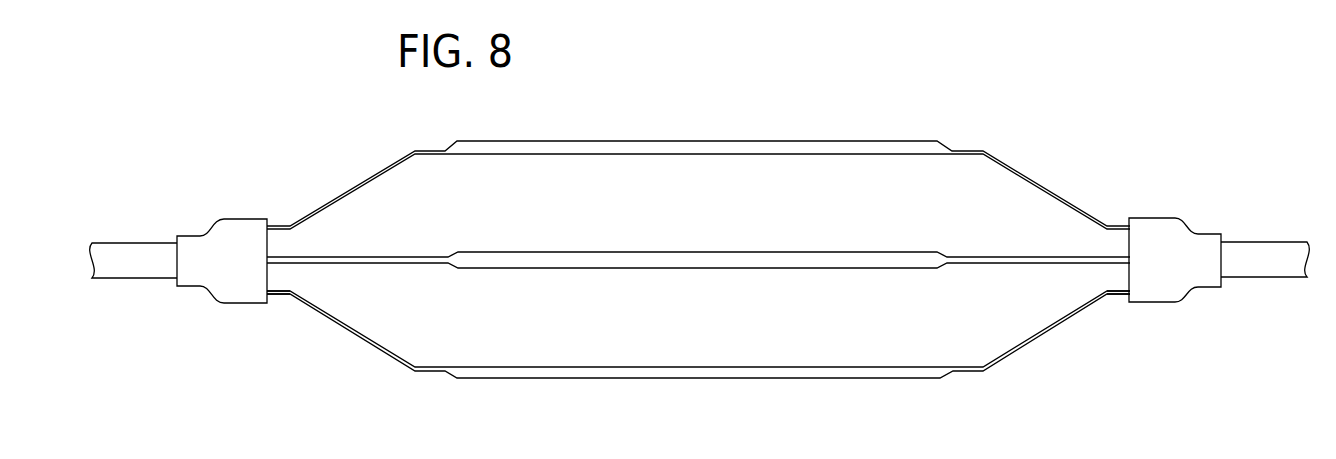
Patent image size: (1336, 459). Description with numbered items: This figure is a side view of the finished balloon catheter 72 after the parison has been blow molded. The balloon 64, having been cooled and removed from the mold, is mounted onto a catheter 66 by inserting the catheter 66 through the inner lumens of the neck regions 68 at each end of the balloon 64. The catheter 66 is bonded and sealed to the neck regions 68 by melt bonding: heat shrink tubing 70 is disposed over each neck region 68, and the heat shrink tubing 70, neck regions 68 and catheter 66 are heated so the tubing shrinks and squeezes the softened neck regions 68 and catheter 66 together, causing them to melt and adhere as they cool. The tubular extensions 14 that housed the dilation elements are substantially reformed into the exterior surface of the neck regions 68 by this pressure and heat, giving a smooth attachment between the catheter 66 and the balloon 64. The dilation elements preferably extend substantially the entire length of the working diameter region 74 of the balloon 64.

The tubular extension 14 is at (582, 141).
The balloon 64 is at (498, 318).
The catheter 66 is at (135, 278).
The neck region 68 is at (280, 295).
The heat shrink tubing 70 is at (240, 219).
The balloon catheter 72 is at (318, 116).
The working diameter region 74 is at (735, 154).